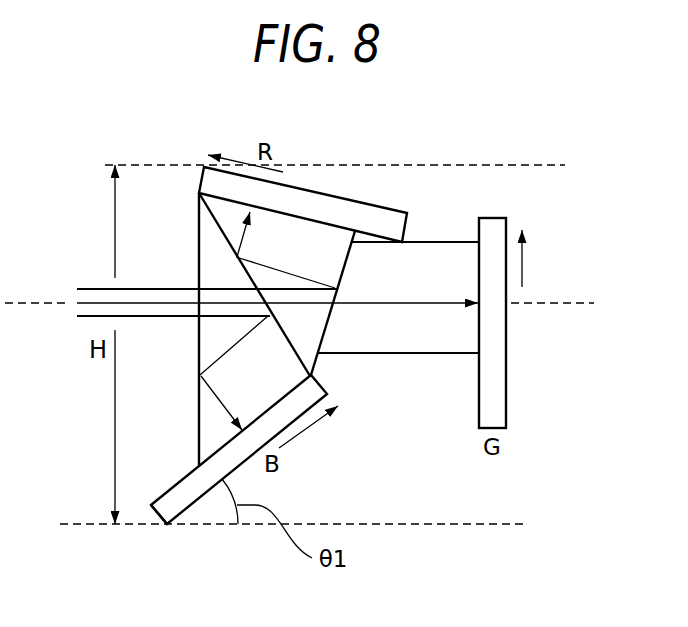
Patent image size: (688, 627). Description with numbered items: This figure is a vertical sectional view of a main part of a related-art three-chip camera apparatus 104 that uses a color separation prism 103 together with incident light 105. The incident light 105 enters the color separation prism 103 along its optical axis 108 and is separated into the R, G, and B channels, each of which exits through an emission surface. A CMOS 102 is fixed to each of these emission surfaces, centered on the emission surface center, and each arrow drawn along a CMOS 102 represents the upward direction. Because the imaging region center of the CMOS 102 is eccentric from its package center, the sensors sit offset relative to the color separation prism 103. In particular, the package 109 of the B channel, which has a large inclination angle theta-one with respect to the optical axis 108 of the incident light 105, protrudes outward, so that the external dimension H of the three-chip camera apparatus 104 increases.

The CMOS 102 is at (390, 203).
The color separation prism 103 is at (193, 431).
The three-chip camera apparatus 104 is at (390, 148).
The incident light 105 is at (97, 280).
The optical axis 108 is at (582, 300).
The package 109 is at (157, 511).